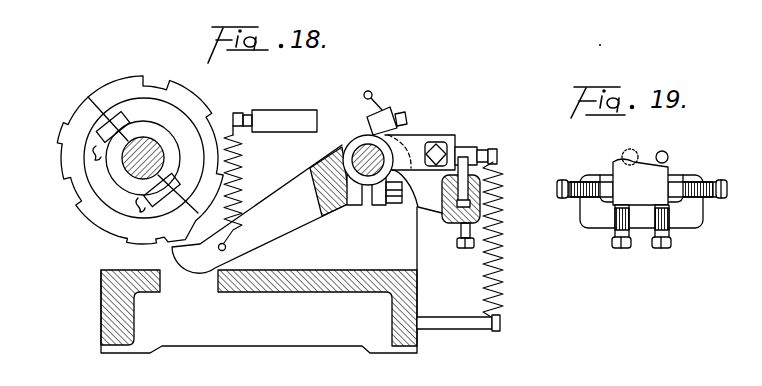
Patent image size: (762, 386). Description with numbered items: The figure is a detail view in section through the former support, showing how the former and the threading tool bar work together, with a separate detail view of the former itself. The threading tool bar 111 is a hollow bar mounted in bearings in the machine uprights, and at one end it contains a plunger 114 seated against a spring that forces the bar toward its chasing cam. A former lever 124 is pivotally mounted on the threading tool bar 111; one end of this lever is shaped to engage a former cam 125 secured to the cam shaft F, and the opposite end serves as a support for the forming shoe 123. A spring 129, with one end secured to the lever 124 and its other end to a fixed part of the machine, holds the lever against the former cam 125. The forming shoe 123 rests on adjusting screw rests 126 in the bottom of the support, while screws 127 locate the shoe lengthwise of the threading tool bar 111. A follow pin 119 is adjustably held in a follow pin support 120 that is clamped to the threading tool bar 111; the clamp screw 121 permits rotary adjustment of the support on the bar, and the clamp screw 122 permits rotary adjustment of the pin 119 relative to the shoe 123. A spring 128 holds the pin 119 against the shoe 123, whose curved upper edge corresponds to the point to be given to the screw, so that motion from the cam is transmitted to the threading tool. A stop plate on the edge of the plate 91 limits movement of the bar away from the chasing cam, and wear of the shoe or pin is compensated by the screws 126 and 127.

In FIG. 18, the cam shaft F is at (124, 167).
In FIG. 18, the former cam 125 is at (148, 105).
In FIG. 18, the plate 91 is at (288, 117).
In FIG. 18, the spring 129 is at (243, 168).
In FIG. 18, the former lever 124 is at (275, 235).
In FIG. 18, the threading tool bar 111 is at (357, 145).
In FIG. 18, the plunger 114 is at (362, 184).
In FIG. 18, the clamp screw 121 is at (397, 201).
In FIG. 18, the follow pin support 120 is at (407, 132).
In FIG. 18, the clamp screw 122 is at (436, 144).
In FIG. 18, the follow pin 119 is at (467, 147).
In FIG. 19, the follow pin 119 is at (666, 153).
In FIG. 18, the forming shoe 123 is at (468, 164).
In FIG. 19, the forming shoe 123 is at (613, 167).
In FIG. 18, the adjusting screw rests 126 is at (462, 250).
In FIG. 19, the adjusting screw rests 126 is at (668, 250).
In FIG. 18, the spring 128 is at (503, 247).
In FIG. 19, the screws 127 is at (718, 193).